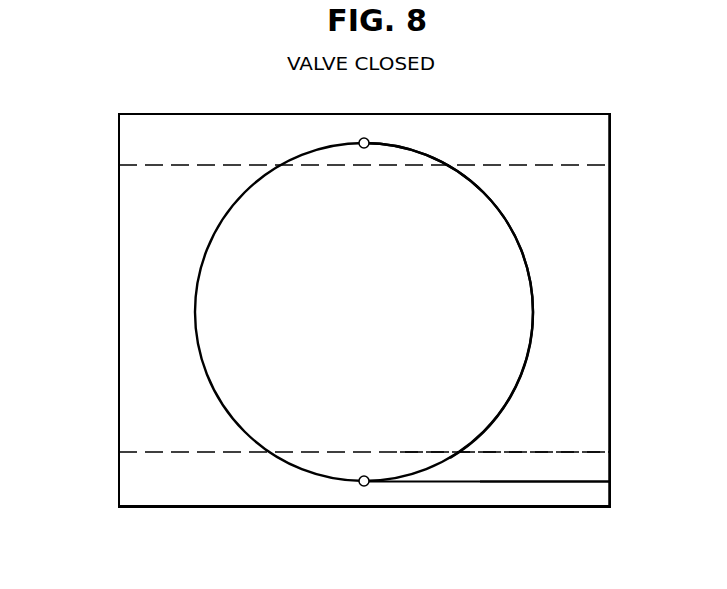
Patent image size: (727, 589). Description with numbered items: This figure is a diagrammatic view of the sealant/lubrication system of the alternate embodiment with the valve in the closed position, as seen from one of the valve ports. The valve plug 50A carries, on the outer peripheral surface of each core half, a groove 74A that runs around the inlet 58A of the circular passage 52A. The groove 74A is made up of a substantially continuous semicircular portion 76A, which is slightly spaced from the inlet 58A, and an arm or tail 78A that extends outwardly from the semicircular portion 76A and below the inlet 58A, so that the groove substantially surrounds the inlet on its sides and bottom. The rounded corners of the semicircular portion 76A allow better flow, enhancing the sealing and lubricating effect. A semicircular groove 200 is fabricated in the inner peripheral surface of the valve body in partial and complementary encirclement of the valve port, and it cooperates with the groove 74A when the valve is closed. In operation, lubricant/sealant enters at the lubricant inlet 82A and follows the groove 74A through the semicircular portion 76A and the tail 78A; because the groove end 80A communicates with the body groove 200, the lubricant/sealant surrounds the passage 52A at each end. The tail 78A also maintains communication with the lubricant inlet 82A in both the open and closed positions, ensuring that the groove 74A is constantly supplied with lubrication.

The valve plug 50A is at (545, 115).
The circular passage 52A is at (596, 345).
The semicircular groove 200 is at (203, 253).
The semicircular portion 76A is at (533, 258).
The groove 74A is at (527, 381).
The inlet 58A is at (593, 452).
The groove end 80A is at (370, 480).
The lubricant inlet 82A is at (368, 485).
The tail 78A is at (550, 484).